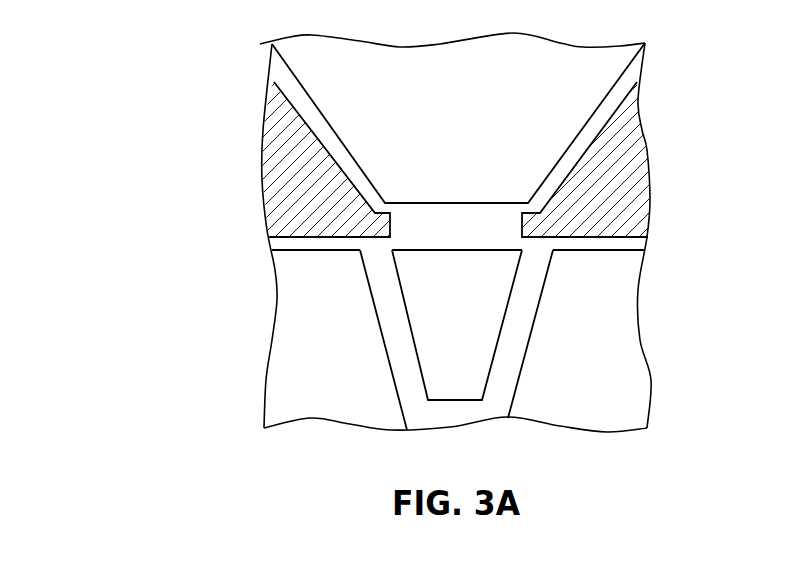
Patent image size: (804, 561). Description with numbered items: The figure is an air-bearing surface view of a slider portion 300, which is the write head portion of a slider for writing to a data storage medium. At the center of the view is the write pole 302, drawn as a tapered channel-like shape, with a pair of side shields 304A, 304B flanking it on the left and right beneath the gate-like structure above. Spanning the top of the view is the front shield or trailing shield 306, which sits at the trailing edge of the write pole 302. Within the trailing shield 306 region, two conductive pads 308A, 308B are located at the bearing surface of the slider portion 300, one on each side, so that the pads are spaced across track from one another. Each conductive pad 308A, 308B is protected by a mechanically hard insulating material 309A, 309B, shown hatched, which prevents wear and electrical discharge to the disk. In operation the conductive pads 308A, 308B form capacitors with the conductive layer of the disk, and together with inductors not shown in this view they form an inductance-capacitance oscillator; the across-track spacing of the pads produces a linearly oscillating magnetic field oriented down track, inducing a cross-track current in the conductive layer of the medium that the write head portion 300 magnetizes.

The slider portion 300 is at (114, 58).
The write pole 302 is at (478, 357).
The side shield 304A is at (283, 363).
The side shield 304B is at (571, 305).
The trailing shield 306 is at (512, 117).
The conductive pad 308A is at (247, 205).
The conductive pad 308B is at (669, 206).
The mechanically hard insulating material 309A is at (287, 127).
The mechanically hard insulating material 309B is at (618, 137).